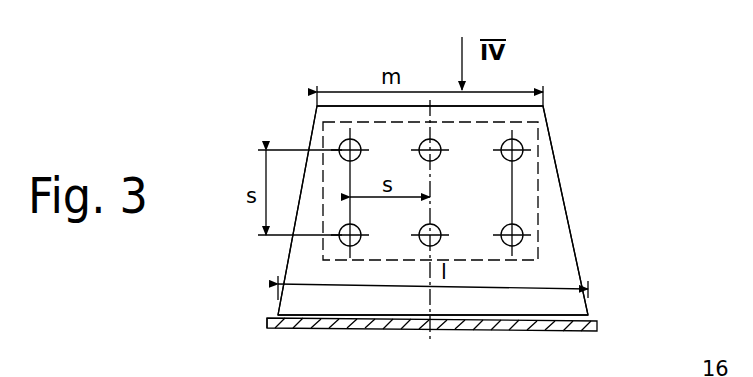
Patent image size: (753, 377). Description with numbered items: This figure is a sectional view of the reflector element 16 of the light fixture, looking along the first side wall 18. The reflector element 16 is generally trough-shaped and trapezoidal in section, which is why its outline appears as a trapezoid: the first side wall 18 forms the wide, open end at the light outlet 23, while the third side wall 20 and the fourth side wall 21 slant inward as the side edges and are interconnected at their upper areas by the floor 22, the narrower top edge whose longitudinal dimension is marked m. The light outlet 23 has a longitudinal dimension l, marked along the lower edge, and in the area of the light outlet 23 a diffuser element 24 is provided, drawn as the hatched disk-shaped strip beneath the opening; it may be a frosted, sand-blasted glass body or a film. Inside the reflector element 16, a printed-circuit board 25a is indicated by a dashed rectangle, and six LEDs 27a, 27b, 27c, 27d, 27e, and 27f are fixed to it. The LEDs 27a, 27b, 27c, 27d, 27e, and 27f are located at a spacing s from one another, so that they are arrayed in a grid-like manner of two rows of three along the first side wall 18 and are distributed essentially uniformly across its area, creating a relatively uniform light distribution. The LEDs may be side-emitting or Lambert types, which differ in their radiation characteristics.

The reflector element 16 is at (498, 160).
The first side wall 18 is at (352, 310).
The third side wall 20 is at (296, 244).
The fourth side wall 21 is at (578, 238).
The floor 22 is at (357, 104).
The light outlet 23 is at (391, 333).
The diffuser element 24 is at (298, 329).
The printed-circuit board 25a is at (527, 178).
The LED 27a is at (340, 142).
The LED 27b is at (340, 242).
The LED 27c is at (427, 140).
The LED 27d is at (437, 245).
The LED 27e is at (523, 144).
The LED 27f is at (522, 228).